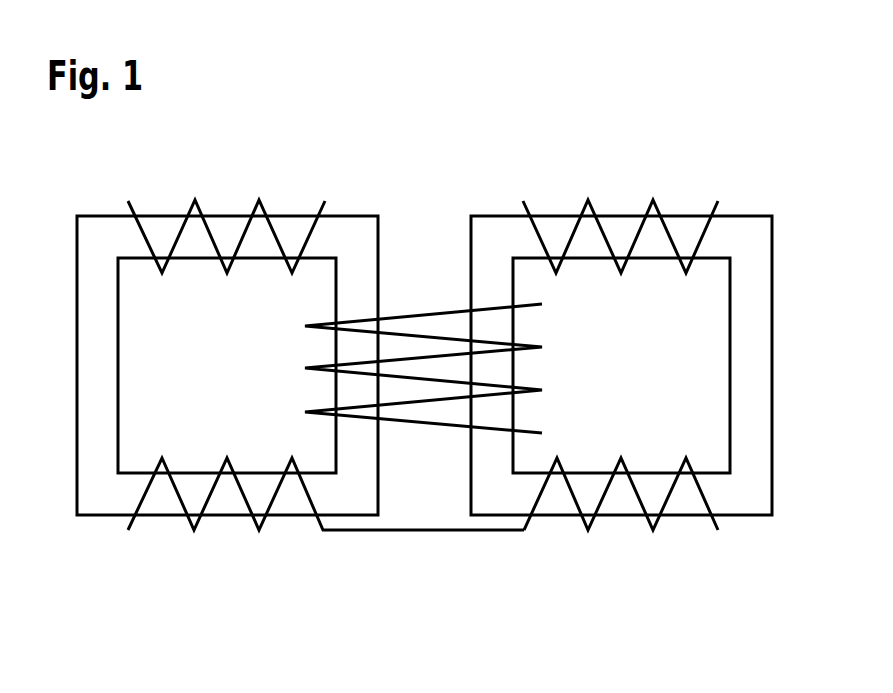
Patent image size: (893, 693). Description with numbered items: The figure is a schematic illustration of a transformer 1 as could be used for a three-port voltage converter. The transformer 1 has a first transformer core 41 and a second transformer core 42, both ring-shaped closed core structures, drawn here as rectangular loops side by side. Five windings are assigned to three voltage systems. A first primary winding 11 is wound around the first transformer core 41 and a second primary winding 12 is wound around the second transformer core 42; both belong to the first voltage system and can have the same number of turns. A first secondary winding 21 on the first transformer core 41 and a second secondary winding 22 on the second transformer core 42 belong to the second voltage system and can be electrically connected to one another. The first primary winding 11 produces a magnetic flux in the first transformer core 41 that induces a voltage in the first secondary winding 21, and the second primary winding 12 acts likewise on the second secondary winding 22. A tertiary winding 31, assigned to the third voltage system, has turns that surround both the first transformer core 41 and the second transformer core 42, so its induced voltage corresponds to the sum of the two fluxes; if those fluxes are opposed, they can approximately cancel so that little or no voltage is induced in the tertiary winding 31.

The transformer 1 is at (450, 571).
The first primary winding 11 is at (198, 206).
The second primary winding 12 is at (590, 205).
The first secondary winding 21 is at (198, 524).
The second secondary winding 22 is at (594, 524).
The tertiary winding 31 is at (427, 312).
The first transformer core 41 is at (103, 492).
The second transformer core 42 is at (745, 490).